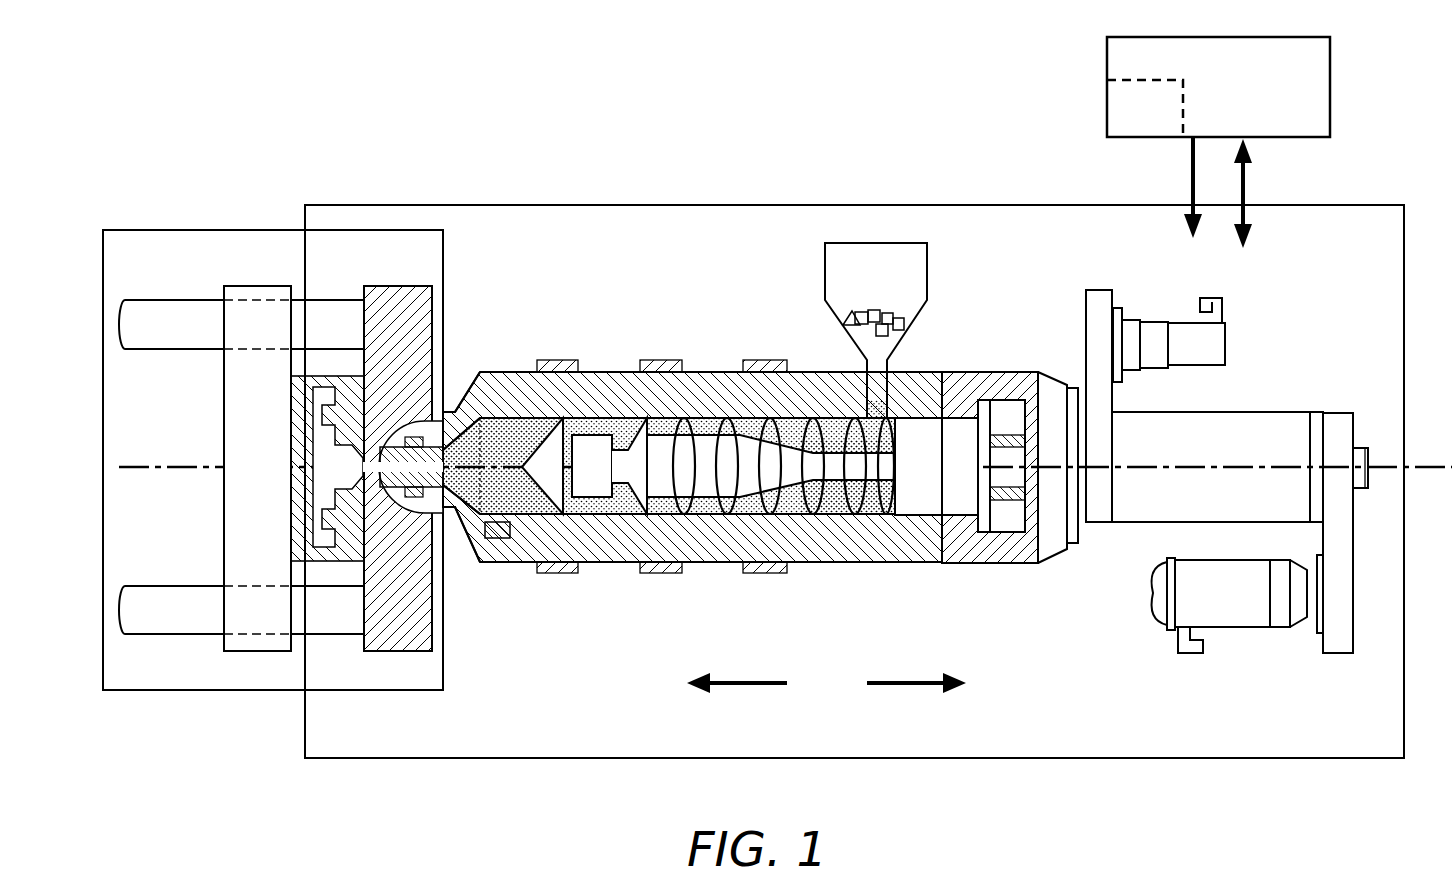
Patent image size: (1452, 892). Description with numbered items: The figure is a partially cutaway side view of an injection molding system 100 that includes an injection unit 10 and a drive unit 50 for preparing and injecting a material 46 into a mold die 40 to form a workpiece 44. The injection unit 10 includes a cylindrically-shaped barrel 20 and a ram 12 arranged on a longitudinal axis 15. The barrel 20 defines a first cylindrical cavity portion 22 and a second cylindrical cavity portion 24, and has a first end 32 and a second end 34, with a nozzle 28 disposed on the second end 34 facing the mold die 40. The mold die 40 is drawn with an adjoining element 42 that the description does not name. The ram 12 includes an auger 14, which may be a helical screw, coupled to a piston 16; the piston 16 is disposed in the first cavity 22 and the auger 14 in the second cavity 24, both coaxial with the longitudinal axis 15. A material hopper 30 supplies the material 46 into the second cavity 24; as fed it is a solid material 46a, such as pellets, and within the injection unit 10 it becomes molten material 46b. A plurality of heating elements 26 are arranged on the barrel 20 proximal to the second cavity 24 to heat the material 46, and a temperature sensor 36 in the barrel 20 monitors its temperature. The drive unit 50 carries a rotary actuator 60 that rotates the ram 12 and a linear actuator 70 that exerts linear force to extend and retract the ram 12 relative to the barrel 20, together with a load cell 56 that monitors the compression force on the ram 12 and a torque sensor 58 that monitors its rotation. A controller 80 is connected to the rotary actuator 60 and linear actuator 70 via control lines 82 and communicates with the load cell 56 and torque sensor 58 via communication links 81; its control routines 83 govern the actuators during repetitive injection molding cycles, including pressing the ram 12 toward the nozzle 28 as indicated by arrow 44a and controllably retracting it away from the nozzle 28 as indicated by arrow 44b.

The injection molding system 100 is at (555, 96).
The injection unit 10 is at (692, 407).
The ram 12 is at (685, 426).
The auger 14 is at (733, 445).
The longitudinal axis 15 is at (250, 461).
The piston 16 is at (924, 480).
The barrel 20 is at (917, 372).
The first cylindrical cavity portion 22 is at (960, 521).
The second cylindrical cavity portion 24 is at (880, 520).
The heating elements 26 is at (762, 574).
The nozzle 28 is at (405, 472).
The material hopper 30 is at (896, 319).
The first end 32 is at (998, 436).
The second end 34 is at (450, 391).
The temperature sensor 36 is at (497, 540).
The mold die 40 is at (273, 458).
The tie rods 42 is at (242, 607).
The workpiece 44 is at (325, 538).
The arrow 44a is at (727, 723).
The arrow 44b is at (888, 723).
The material 46 is at (898, 322).
The solid material 46a is at (842, 516).
The molten material 46b is at (527, 440).
The drive unit 50 is at (1265, 468).
The load cell 56 is at (1362, 438).
The torque sensor 58 is at (1127, 329).
The rotary actuator 60 is at (1154, 617).
The linear actuator 70 is at (1229, 346).
The controller 80 is at (1218, 87).
The communication links 81 is at (1243, 187).
The control lines 82 is at (1193, 187).
The control routines 83 is at (1157, 121).